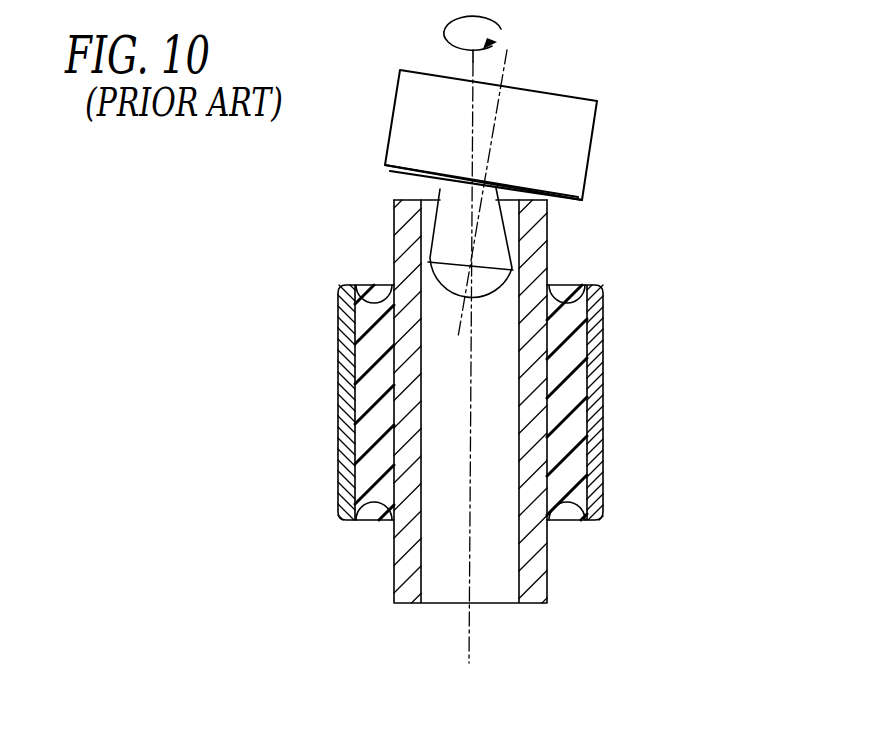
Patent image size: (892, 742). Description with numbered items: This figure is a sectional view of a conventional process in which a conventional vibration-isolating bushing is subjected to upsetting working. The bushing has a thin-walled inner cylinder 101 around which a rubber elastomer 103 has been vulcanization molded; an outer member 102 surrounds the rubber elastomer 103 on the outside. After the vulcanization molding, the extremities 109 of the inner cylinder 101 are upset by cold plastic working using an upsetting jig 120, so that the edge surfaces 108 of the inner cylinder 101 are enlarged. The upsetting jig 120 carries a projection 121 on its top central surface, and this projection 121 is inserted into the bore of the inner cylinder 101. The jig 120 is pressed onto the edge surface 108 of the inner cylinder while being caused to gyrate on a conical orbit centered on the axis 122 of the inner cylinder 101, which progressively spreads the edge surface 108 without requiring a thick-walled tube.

The inner cylinder 101 is at (543, 437).
The left flange / seal ring 102 is at (345, 380).
The rubber elastomer 103 is at (573, 355).
The edge surface 108 is at (408, 200).
The extremity 109 is at (547, 223).
The upsetting jig 120 is at (563, 130).
The projection 121 is at (453, 242).
The axis 122 is at (473, 70).